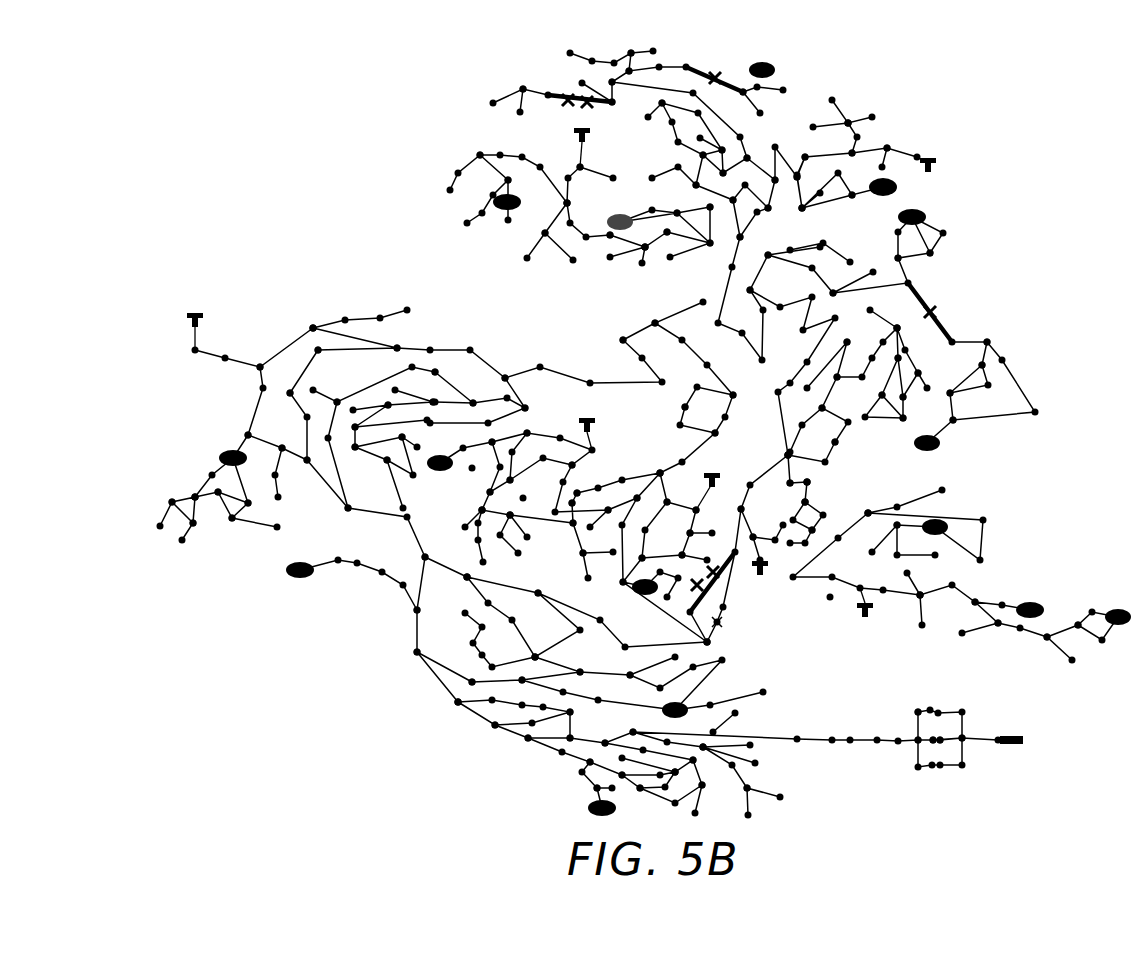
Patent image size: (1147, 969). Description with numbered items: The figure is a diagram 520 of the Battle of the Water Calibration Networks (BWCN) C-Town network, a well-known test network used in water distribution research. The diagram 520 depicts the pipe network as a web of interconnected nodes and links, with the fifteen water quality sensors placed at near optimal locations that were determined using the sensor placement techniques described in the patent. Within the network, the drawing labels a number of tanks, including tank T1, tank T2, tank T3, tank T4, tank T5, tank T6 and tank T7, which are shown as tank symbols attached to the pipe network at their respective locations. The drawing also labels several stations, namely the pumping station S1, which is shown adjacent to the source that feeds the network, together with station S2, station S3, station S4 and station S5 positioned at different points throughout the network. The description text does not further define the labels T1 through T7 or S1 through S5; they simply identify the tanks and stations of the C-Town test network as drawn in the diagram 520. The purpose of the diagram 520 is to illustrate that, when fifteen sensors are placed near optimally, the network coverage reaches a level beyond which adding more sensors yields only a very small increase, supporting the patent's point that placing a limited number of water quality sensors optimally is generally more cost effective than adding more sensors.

The diagram 520 is at (1018, 121).
The tank T1 is at (187, 315).
The tank T2 is at (757, 587).
The tank T3 is at (863, 621).
The tank T4 is at (928, 147).
The tank T5 is at (558, 147).
The tank T6 is at (716, 479).
The tank T7 is at (586, 423).
The pumping station S1 is at (948, 723).
The station S2 is at (826, 491).
The station S3 is at (853, 450).
The station S4 is at (608, 347).
The station S5 is at (667, 407).